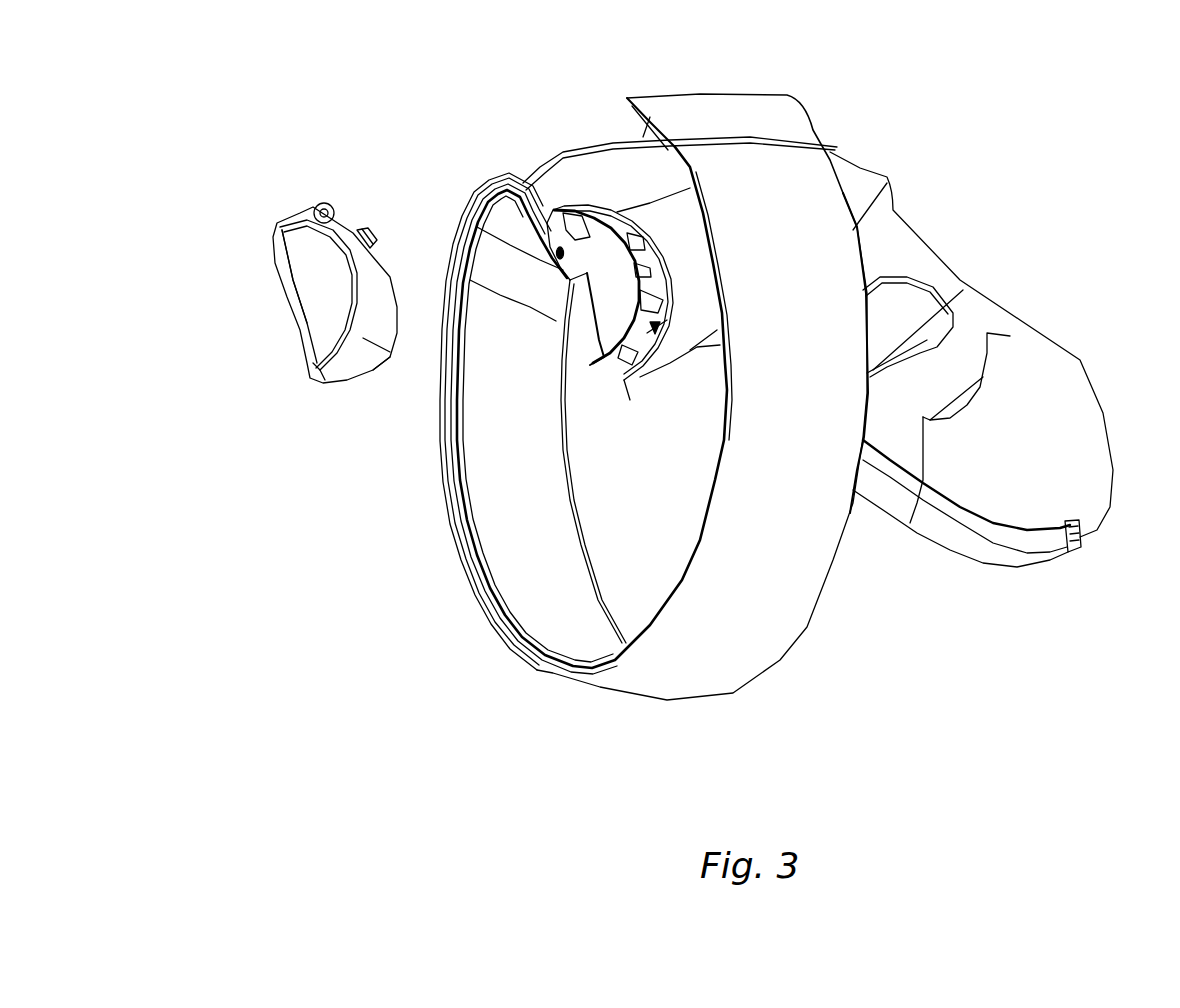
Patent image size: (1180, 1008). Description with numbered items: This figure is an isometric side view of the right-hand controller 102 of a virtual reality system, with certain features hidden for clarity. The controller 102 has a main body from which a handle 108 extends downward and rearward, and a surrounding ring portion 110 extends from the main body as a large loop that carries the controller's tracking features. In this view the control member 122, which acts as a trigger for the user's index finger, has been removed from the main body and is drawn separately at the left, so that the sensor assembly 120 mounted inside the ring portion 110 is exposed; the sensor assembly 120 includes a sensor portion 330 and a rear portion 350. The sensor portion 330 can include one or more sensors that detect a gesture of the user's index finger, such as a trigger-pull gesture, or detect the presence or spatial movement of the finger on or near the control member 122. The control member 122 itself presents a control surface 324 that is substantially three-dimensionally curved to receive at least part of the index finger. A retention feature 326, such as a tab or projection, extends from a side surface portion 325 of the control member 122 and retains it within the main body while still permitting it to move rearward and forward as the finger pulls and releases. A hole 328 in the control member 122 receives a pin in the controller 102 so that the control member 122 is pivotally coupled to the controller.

The right-hand controller 102 is at (893, 140).
The handle 108 is at (1070, 357).
The surrounding ring portion 110 is at (800, 632).
The sensor assembly 120 is at (353, 503).
The control member 122 is at (273, 210).
The control surface 324 is at (307, 302).
The side surface portion 325 is at (380, 363).
The retention feature 326 is at (367, 230).
The hole 328 is at (330, 202).
The sensor portion 330 is at (585, 368).
The rear portion 350 is at (642, 318).